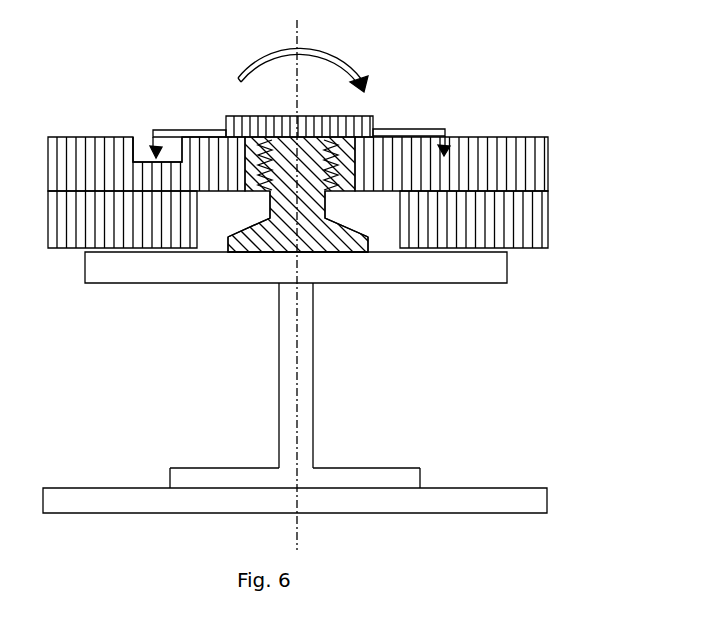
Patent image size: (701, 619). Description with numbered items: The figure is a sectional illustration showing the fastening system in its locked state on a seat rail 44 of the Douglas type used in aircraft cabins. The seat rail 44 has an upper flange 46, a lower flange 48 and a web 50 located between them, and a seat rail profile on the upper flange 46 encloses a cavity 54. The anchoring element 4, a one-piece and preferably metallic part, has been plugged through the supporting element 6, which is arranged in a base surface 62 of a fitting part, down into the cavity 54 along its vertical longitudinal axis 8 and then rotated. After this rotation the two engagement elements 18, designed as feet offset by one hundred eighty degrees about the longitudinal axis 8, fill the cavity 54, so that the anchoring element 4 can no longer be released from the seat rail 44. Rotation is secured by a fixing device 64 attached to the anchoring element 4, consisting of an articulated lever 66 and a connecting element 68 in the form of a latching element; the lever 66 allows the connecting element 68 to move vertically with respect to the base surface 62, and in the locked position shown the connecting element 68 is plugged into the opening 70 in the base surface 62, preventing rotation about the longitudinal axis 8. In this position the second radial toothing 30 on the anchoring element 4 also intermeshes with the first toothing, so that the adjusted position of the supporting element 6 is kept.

The anchoring element 4 is at (292, 180).
The supporting element 6 is at (252, 116).
The longitudinal axis 8 is at (300, 110).
The engagement elements 18 is at (240, 243).
The second radial toothing 30 is at (366, 120).
The seat rail 44 is at (295, 382).
The upper flange 46 is at (113, 283).
The lower flange 48 is at (198, 482).
The web 50 is at (303, 393).
The cavity 54 is at (348, 220).
The base surface 62 is at (497, 150).
The fixing device 64 is at (190, 128).
The lever 66 is at (155, 148).
The connecting element 68 is at (140, 133).
The opening 70 is at (140, 156).